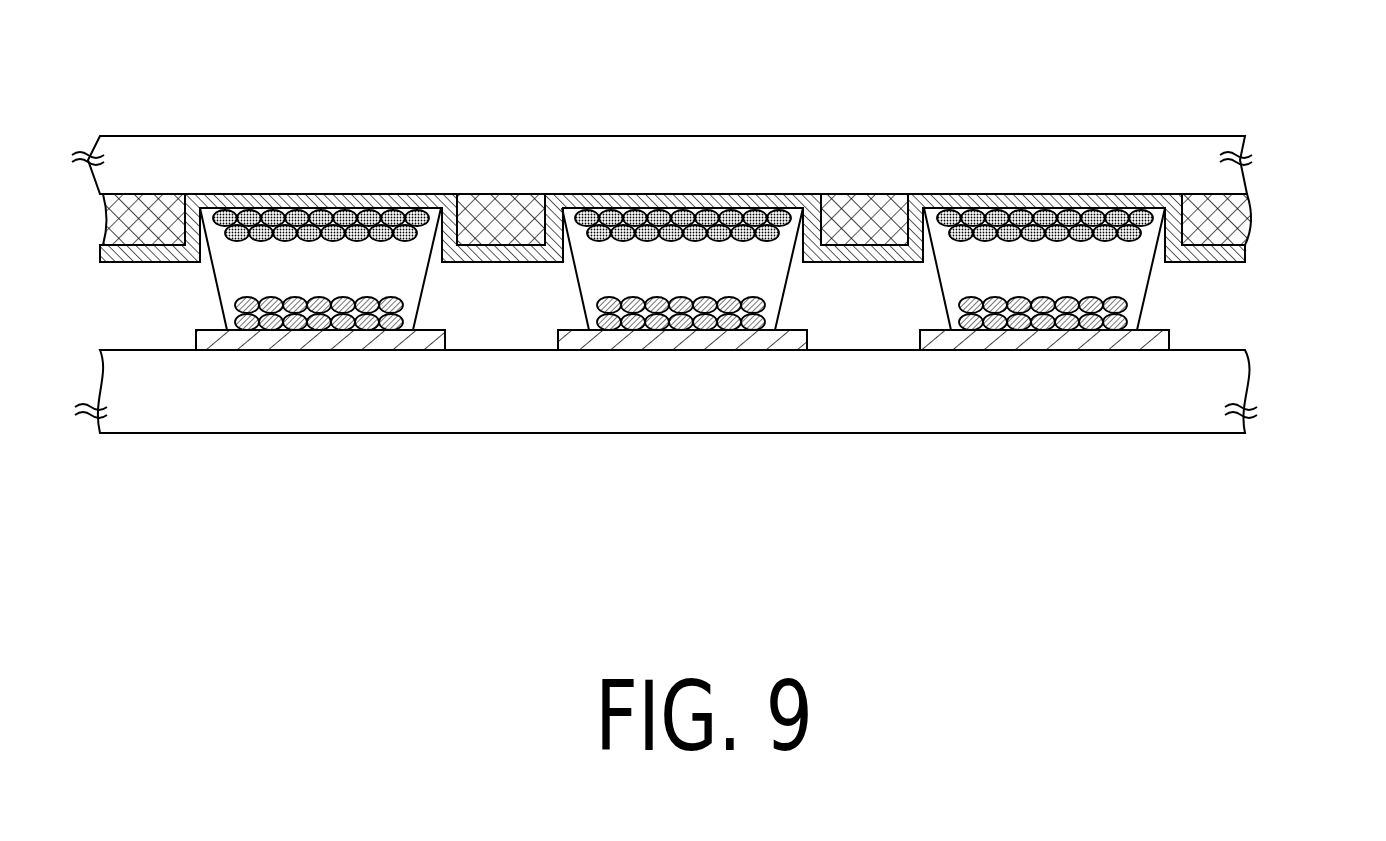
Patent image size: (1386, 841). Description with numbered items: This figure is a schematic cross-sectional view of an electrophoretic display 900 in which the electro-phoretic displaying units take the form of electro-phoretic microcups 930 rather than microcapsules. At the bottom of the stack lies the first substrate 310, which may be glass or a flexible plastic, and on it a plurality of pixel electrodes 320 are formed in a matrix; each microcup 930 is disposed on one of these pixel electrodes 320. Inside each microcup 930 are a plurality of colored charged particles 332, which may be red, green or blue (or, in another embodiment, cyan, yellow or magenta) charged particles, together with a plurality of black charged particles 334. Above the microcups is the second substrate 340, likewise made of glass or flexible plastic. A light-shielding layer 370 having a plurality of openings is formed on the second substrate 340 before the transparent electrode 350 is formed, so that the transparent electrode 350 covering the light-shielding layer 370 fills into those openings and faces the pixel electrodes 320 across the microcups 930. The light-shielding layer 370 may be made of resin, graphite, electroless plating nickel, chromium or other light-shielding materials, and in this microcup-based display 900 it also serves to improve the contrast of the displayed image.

The light emitting device 900 is at (726, 306).
The first substrate 310 is at (1247, 385).
The pixel electrode 320 is at (1090, 345).
The colored charged particles 332 is at (1047, 217).
The black charged particles 334 is at (1023, 320).
The second substrate 340 is at (1183, 150).
The transparent electrode 350 is at (950, 197).
The light-shielding layer 370 is at (1252, 212).
The electro-phoretic microcup 930 is at (1137, 283).